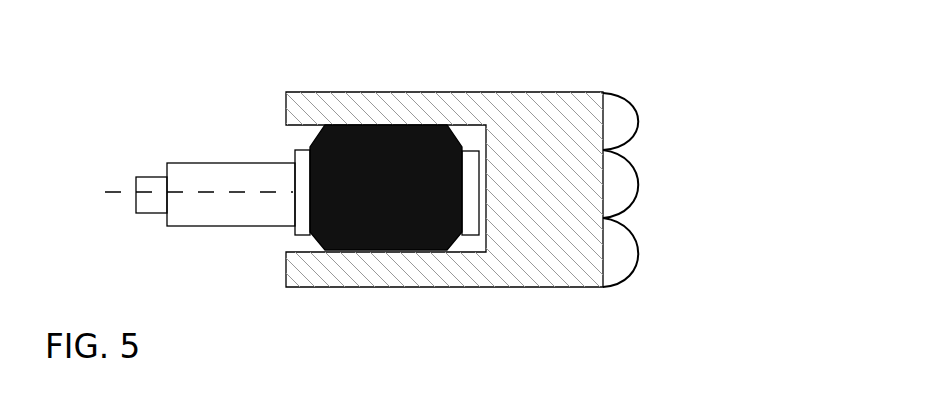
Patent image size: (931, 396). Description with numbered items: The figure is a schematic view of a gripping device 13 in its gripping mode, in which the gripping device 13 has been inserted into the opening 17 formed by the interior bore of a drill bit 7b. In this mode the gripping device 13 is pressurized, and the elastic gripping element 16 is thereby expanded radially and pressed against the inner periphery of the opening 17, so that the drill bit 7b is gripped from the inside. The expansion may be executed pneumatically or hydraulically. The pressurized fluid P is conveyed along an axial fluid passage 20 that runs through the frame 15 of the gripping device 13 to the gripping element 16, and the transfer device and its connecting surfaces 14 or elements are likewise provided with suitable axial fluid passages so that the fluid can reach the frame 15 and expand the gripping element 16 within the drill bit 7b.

The drill bit 7b is at (442, 156).
The gripping device 13 is at (117, 71).
The connecting surfaces 14 is at (107, 219).
The frame 15 is at (216, 226).
The gripping element 16 is at (395, 227).
The opening 17 is at (268, 246).
The axial fluid passage 20 is at (190, 153).